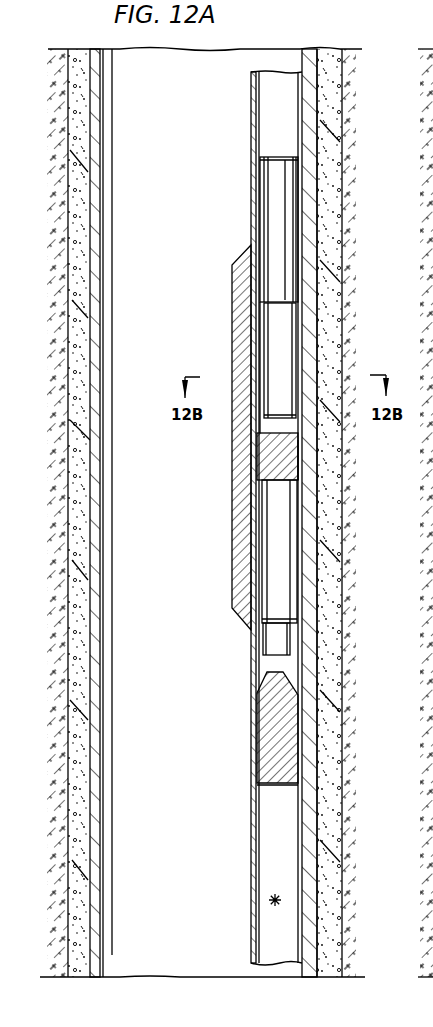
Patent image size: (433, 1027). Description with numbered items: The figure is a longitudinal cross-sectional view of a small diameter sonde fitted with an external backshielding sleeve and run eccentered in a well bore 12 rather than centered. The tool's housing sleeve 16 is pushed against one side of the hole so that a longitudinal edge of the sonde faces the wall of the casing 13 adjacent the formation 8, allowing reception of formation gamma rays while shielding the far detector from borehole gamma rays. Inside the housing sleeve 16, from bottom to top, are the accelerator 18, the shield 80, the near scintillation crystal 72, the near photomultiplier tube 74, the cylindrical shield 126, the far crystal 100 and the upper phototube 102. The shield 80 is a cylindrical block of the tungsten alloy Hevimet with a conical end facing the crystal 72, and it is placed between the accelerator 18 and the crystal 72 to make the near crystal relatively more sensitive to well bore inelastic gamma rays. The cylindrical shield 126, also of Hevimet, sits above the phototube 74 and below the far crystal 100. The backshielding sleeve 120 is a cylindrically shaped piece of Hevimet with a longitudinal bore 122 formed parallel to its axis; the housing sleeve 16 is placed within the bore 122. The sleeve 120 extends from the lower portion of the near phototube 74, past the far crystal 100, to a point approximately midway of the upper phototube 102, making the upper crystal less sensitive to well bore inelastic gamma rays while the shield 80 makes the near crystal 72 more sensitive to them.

The formation 8 is at (366, 611).
The well bore 12 is at (154, 635).
The casing 13 is at (94, 581).
The housing sleeve 16 is at (252, 828).
The accelerator 18 is at (268, 901).
The scintillation crystal 72 is at (268, 640).
The photomultiplier tube 74 is at (272, 563).
The shield 80 is at (268, 722).
The far crystal 100 is at (273, 330).
The upper phototube 102 is at (273, 200).
The backshielding sleeve 120 is at (238, 488).
The longitudinal bore 122 is at (254, 445).
The cylindrical shield 126 is at (302, 459).